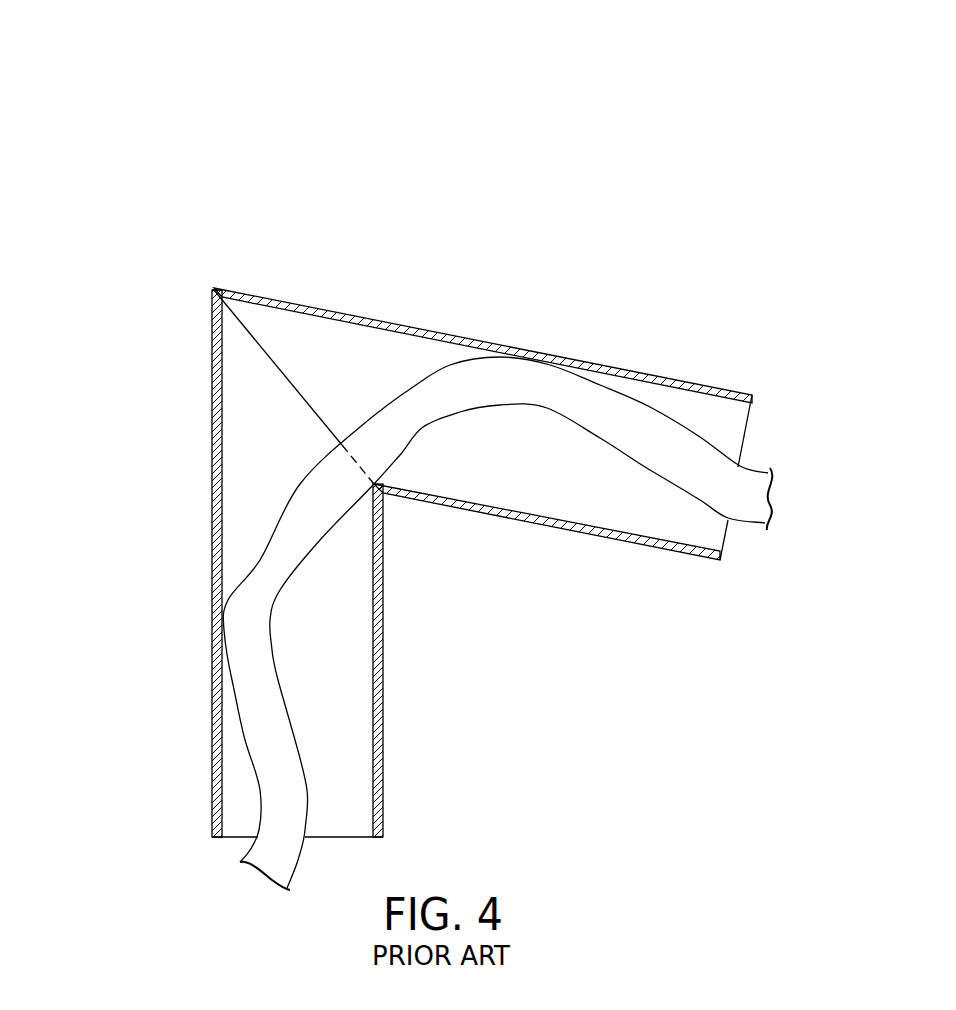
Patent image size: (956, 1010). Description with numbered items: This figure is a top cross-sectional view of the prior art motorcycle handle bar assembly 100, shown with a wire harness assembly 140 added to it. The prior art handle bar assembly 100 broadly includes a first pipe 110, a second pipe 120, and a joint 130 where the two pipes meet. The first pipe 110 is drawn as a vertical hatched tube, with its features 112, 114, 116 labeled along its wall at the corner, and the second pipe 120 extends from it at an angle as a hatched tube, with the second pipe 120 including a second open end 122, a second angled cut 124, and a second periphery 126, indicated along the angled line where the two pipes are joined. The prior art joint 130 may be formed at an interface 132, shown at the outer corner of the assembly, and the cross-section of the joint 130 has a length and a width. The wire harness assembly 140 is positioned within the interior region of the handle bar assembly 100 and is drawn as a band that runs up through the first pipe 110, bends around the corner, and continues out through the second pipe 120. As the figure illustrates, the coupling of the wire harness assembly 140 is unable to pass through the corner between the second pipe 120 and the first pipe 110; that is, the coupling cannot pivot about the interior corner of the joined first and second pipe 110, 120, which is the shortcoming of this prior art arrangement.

The prior art handle bar assembly 100 is at (391, 88).
The first pipe 110 is at (212, 750).
The first wall portion 112 is at (237, 316).
The second wall portion 114 is at (294, 388).
The third wall portion 116 is at (350, 456).
The second pipe 120 is at (680, 381).
The second open end 122 is at (268, 352).
The second angled cut 124 is at (318, 416).
The second periphery 126 is at (372, 470).
The joint 130 is at (213, 288).
The interface 132 is at (214, 288).
The wire harness assembly 140 is at (761, 470).